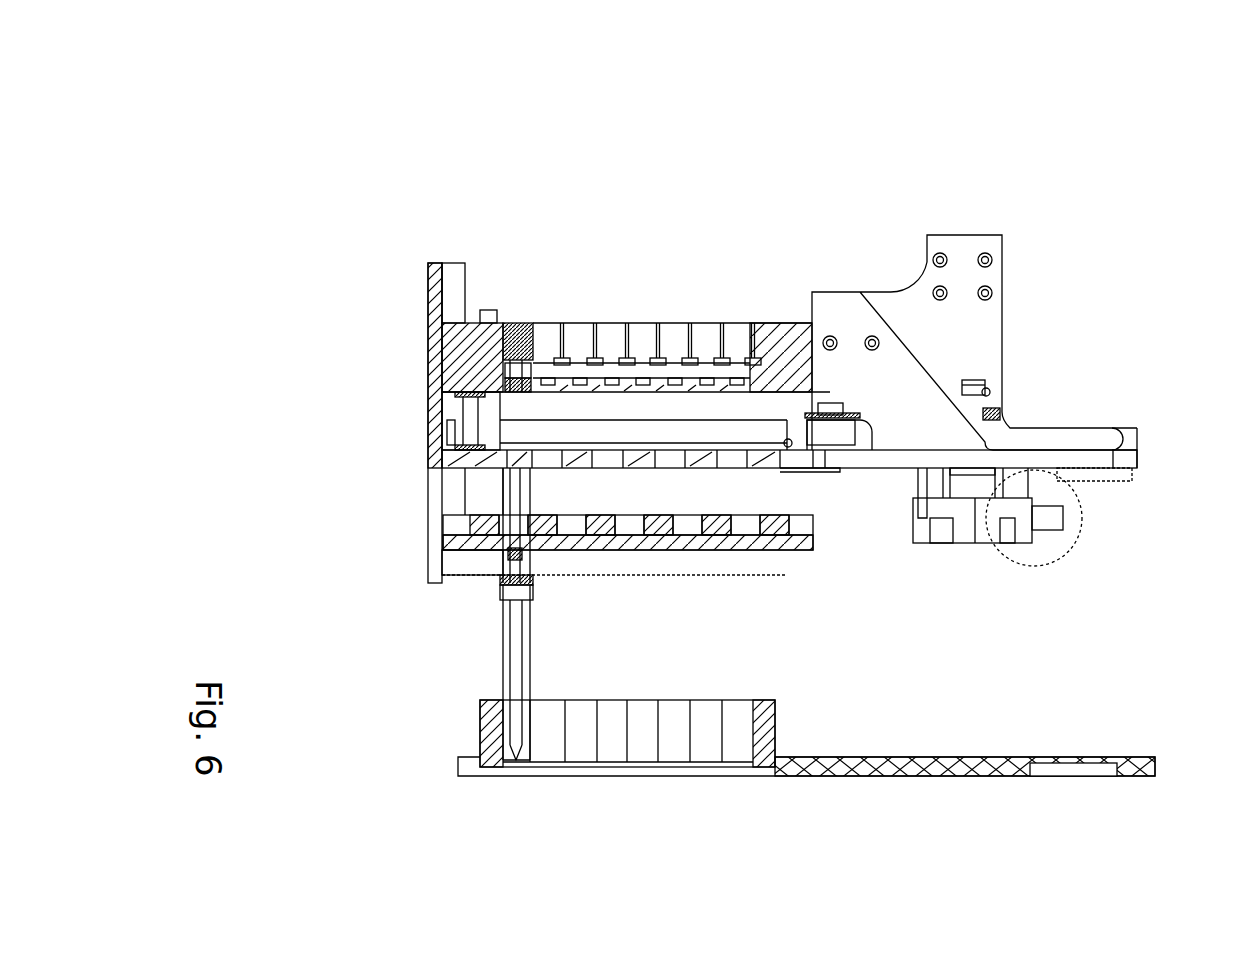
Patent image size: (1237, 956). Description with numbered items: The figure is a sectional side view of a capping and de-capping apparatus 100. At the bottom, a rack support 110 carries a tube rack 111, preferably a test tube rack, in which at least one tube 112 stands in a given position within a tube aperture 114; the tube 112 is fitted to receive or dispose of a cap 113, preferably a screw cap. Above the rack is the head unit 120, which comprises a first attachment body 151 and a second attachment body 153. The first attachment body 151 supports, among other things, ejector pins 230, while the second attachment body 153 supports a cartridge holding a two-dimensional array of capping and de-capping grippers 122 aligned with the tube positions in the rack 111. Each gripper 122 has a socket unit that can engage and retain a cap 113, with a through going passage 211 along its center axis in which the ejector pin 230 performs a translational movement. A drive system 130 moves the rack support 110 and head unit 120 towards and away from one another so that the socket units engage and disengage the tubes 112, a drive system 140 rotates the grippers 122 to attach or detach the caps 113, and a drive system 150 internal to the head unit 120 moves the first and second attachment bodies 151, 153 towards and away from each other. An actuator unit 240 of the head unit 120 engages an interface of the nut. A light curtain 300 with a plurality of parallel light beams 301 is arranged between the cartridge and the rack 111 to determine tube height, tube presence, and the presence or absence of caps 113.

The capping and de-capping apparatus 100 is at (652, 220).
The rack support 110 is at (864, 755).
The tube rack 111 is at (783, 704).
The tube 112 is at (537, 655).
The cap 113 is at (536, 596).
The tube aperture 114 is at (705, 705).
The head unit 120 is at (1005, 348).
The capping and de-capping gripper 122 is at (531, 503).
The drive system 130 is at (1126, 487).
The drive system 140 is at (506, 348).
The drive system 150 is at (1000, 518).
The first attachment body 151 is at (456, 381).
The second attachment body 153 is at (471, 523).
The through going passage 211 is at (522, 584).
The ejector pin 230 is at (522, 555).
The actuator unit 240 is at (511, 319).
The light curtain 300 is at (440, 592).
The parallel light beams 301 is at (485, 579).